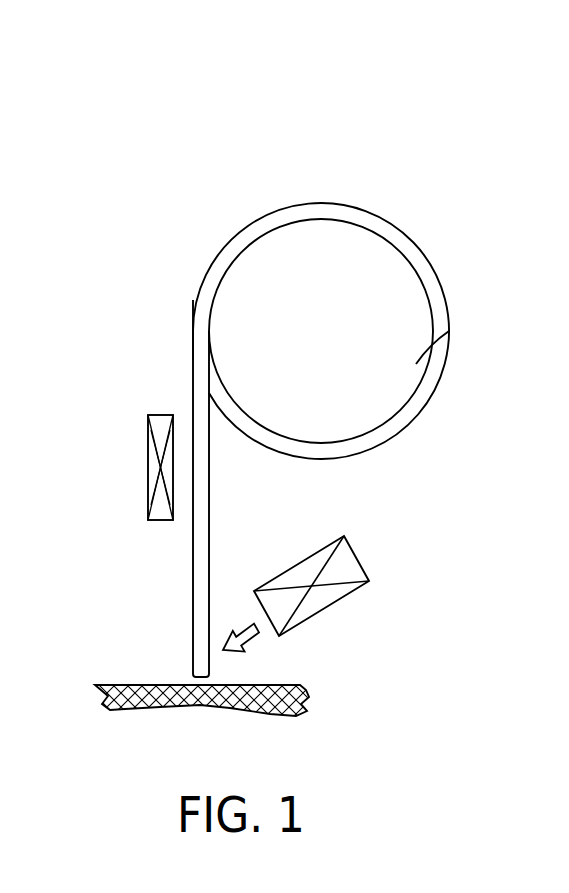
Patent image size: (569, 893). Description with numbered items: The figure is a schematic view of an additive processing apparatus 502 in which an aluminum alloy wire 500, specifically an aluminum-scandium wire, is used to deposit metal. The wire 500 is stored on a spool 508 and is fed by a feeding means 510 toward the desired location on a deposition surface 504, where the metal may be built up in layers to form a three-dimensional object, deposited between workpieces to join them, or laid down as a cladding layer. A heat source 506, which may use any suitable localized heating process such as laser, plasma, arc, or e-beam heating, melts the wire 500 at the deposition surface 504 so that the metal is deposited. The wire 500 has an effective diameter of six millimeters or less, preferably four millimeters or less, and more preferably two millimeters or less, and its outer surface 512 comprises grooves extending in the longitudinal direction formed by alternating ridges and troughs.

The aluminum alloy wire 500 is at (433, 290).
The additive processing apparatus 502 is at (412, 182).
The deposition surface 504 is at (150, 686).
The heat source 506 is at (364, 561).
The spool 508 is at (342, 317).
The feeding means 510 is at (148, 465).
The outer surface 512 is at (432, 397).